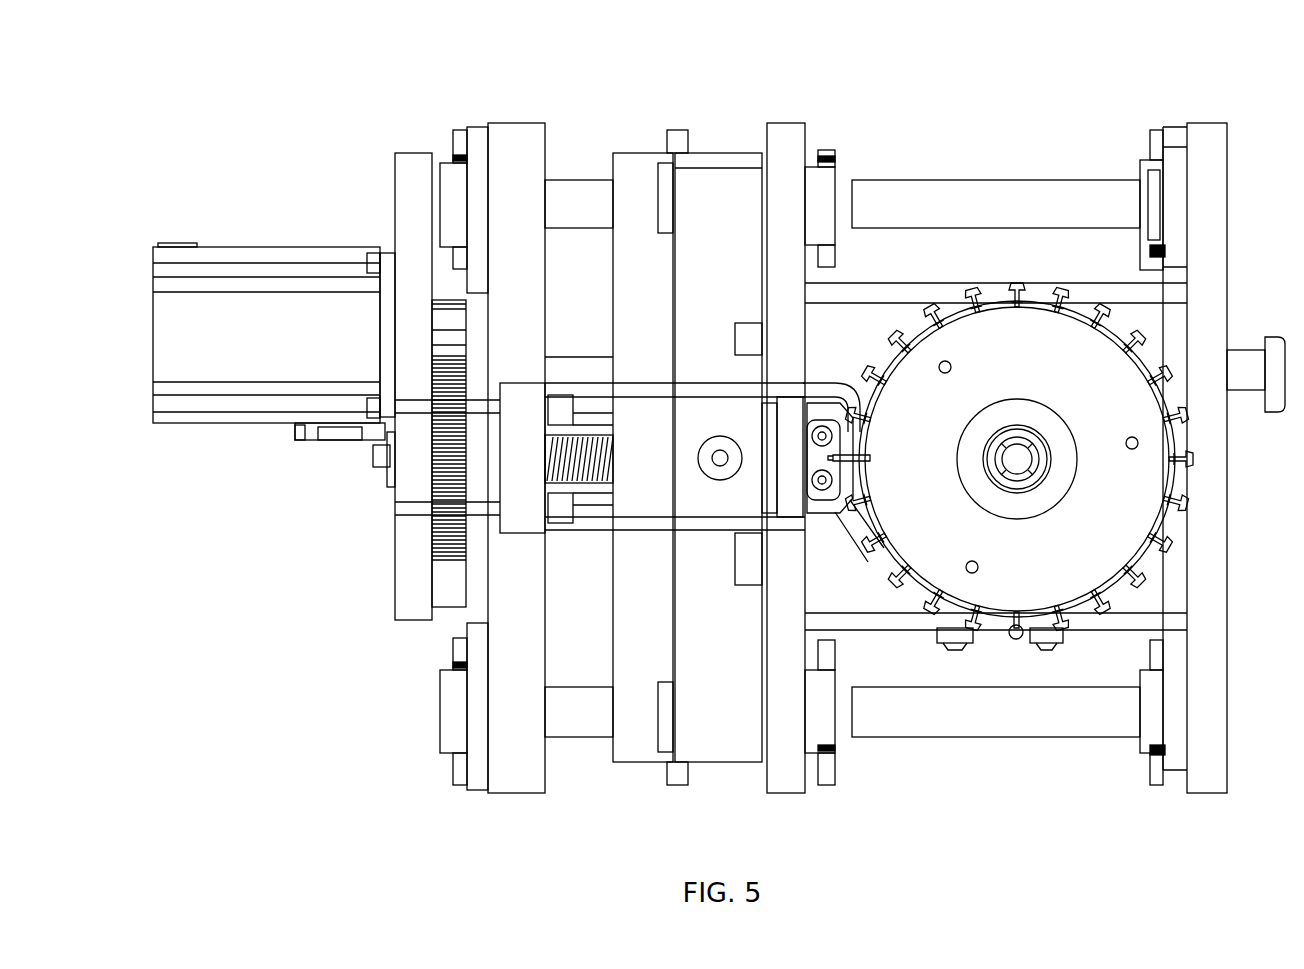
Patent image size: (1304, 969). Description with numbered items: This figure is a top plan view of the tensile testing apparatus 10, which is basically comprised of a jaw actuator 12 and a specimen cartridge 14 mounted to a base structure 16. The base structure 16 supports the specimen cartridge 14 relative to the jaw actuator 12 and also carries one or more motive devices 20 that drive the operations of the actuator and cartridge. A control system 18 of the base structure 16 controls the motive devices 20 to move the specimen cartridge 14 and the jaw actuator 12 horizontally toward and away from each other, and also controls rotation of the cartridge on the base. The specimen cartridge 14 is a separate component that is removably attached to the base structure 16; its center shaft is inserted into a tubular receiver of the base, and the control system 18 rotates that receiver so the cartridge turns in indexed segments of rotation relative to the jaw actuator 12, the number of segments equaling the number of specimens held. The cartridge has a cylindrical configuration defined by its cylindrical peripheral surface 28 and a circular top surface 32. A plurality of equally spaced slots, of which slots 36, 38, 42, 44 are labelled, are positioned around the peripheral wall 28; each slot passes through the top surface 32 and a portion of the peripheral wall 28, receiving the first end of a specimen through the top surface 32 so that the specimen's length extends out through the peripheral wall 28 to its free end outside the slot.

The tensile testing apparatus 10 is at (910, 100).
The jaw actuator 12 is at (836, 512).
The specimen cartridge 14 is at (1035, 582).
The base structure 16 is at (705, 140).
The control system 18 is at (428, 760).
The motive device 20 is at (252, 432).
The cylindrical peripheral surface 28 is at (1177, 513).
The circular top surface 32 is at (1112, 538).
The slot 36 is at (882, 457).
The slot 38 is at (1017, 322).
The slot 42 is at (1148, 457).
The slot 44 is at (1017, 598).